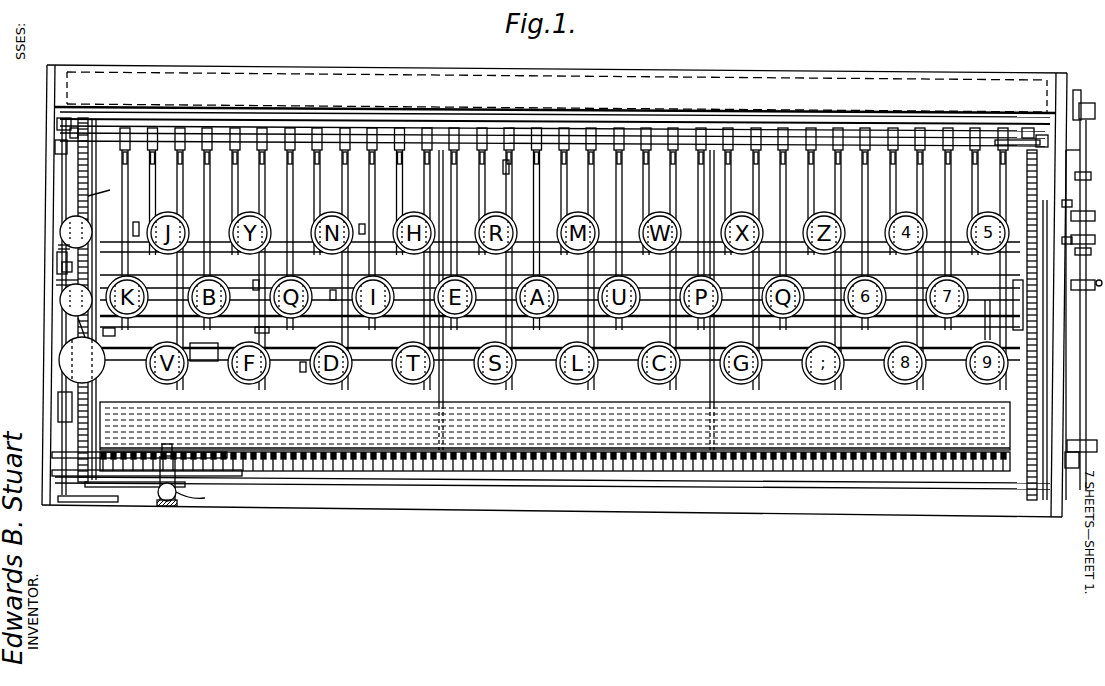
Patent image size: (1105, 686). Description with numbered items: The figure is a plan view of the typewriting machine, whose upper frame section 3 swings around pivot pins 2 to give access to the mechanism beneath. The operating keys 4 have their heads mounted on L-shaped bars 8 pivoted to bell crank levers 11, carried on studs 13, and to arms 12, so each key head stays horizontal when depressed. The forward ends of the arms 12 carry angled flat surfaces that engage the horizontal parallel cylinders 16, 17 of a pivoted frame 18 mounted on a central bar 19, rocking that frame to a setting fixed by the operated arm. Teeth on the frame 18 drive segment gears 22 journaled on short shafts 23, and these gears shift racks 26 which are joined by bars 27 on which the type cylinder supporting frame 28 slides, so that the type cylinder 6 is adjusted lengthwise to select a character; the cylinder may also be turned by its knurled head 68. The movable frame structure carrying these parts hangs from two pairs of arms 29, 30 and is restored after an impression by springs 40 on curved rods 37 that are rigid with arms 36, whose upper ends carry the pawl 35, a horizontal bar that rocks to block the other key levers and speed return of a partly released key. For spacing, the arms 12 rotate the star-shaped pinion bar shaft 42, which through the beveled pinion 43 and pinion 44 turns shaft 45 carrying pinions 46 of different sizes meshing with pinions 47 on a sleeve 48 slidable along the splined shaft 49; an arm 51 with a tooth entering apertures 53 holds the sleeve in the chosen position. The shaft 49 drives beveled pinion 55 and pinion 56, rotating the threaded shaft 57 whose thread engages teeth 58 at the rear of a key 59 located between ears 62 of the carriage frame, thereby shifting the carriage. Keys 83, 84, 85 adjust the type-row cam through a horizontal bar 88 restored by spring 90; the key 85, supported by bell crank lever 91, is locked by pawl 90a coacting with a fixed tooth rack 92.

The pivot pins 2 is at (520, 100).
The upper section of the frame 3 is at (47, 83).
The operating keys 4 is at (805, 222).
The type cylinder 6 is at (772, 480).
The L-shaped bars 8 is at (542, 258).
The bell crank levers 11 is at (511, 172).
The arms 12 is at (330, 195).
The studs 13 is at (432, 150).
The cylinder 16 is at (266, 331).
The cylinder 17 is at (256, 281).
The pivoted frame 18 is at (988, 336).
The central bar 19 is at (334, 291).
The segment gears 22 is at (70, 296).
The short shafts 23 is at (210, 363).
The racks 26 is at (79, 166).
The bars 27 is at (362, 226).
The type cylinder supporting frame 28 is at (138, 224).
The arms 29 is at (93, 198).
The arms 30 is at (1044, 398).
The pawl 35 is at (850, 130).
The arms 36 is at (58, 150).
The curved rods 37 is at (70, 133).
The springs 40 is at (60, 124).
The pinion bar shaft 42 is at (172, 128).
The beveled pinion 43 is at (1082, 105).
The pinion 44 is at (1093, 128).
The shaft 45 is at (1075, 325).
The pinions 46 is at (1084, 180).
The pinions 47 is at (1060, 219).
The sleeve 48 is at (1088, 244).
The shaft 49 is at (1084, 344).
The arm 51 is at (1088, 278).
The apertures 53 is at (1073, 255).
The beveled pinion 55 is at (1080, 452).
The pinion 56 is at (1073, 469).
The threaded shaft 57 is at (978, 482).
The teeth 58 is at (170, 446).
The key 59 is at (184, 498).
The ears 62 is at (158, 496).
The knurled head 68 is at (169, 506).
The key 83 is at (80, 372).
The key 84 is at (80, 318).
The key 85 is at (61, 226).
The horizontal bar 88 is at (66, 190).
The spring 90 is at (68, 285).
The pawl 90a is at (62, 268).
The bell crank lever 91 is at (60, 245).
The fixed tooth rack 92 is at (58, 256).